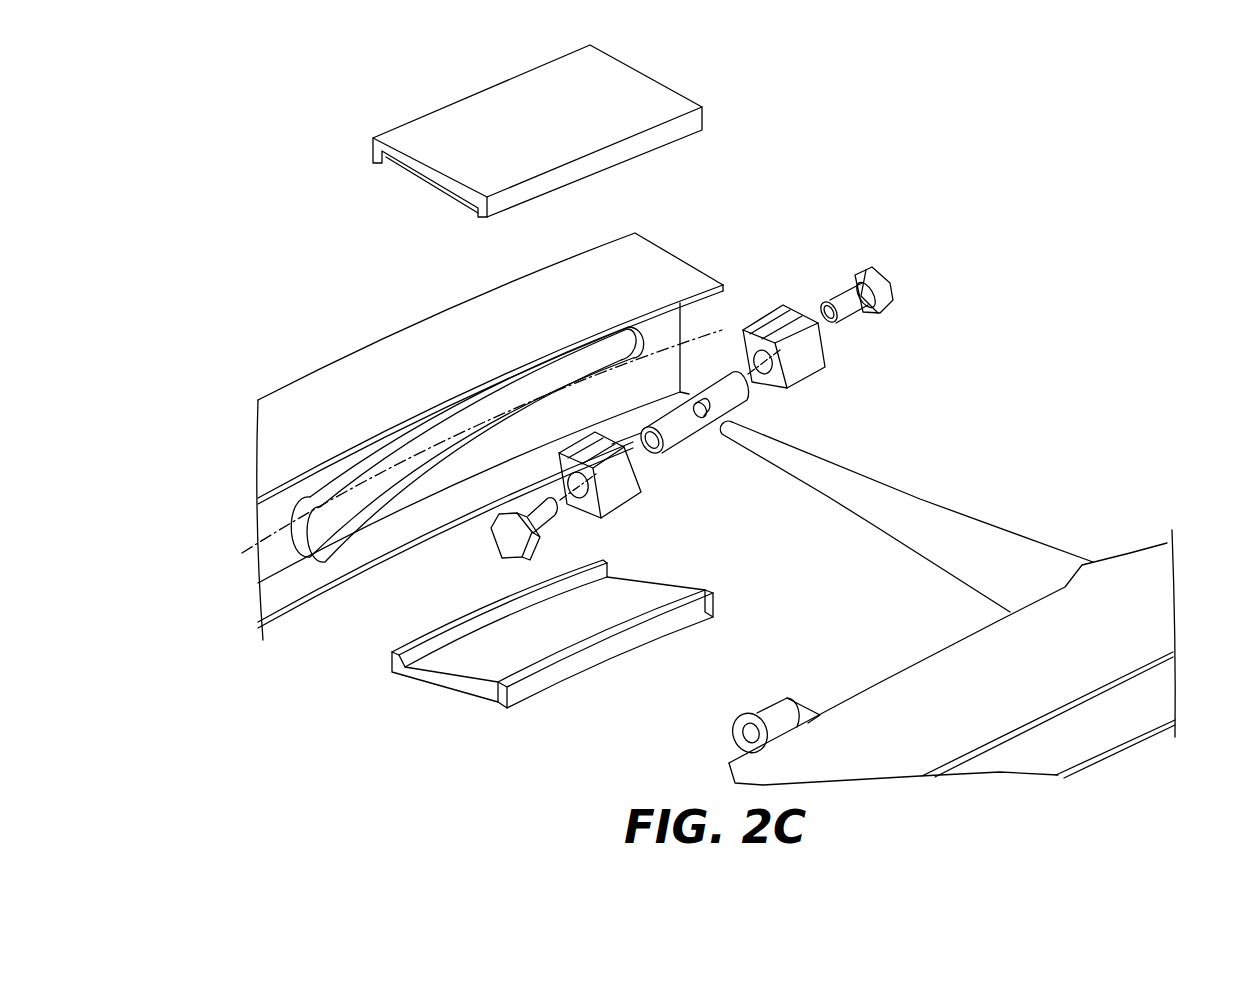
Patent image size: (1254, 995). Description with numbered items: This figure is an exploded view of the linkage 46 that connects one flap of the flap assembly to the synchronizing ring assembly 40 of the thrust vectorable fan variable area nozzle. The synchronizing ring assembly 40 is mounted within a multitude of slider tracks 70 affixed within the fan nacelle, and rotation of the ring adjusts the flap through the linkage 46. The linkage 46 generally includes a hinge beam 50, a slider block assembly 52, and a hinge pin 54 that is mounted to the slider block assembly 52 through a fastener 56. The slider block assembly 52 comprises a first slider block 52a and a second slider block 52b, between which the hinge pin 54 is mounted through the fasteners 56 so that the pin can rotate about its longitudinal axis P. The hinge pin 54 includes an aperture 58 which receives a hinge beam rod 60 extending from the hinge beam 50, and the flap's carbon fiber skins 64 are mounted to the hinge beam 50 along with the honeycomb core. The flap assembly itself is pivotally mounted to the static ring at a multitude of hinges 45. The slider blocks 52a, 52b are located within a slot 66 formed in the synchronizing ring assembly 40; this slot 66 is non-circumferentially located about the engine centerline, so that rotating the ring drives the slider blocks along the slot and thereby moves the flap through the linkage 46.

The synchronizing ring assembly 40 is at (677, 277).
The hinge 45 is at (788, 697).
The linkage 46 is at (988, 492).
The hinge beam 50 is at (1145, 610).
The slider block assembly 52 is at (895, 278).
The first slider block 52a is at (627, 492).
The second slider block 52b is at (808, 372).
The hinge pin 54 is at (757, 396).
The fastener 56 is at (505, 543).
The aperture 58 is at (702, 406).
The hinge beam rod 60 is at (788, 453).
The carbon fiber skins 64 is at (318, 578).
The slot 66 is at (441, 435).
The slider track 70 is at (655, 88).
The longitudinal axis P is at (822, 327).